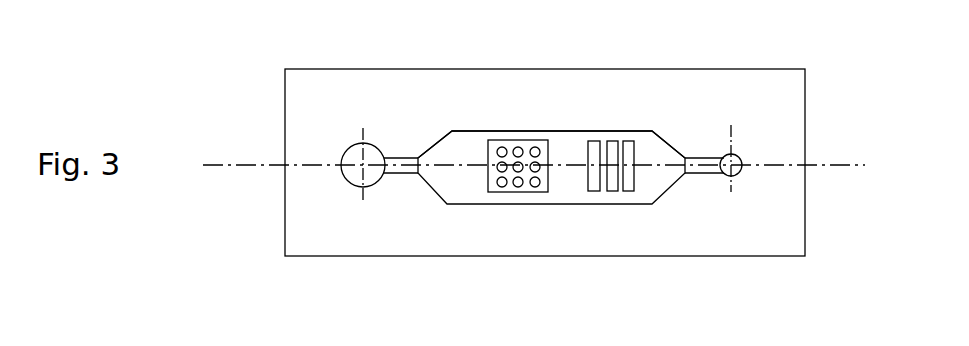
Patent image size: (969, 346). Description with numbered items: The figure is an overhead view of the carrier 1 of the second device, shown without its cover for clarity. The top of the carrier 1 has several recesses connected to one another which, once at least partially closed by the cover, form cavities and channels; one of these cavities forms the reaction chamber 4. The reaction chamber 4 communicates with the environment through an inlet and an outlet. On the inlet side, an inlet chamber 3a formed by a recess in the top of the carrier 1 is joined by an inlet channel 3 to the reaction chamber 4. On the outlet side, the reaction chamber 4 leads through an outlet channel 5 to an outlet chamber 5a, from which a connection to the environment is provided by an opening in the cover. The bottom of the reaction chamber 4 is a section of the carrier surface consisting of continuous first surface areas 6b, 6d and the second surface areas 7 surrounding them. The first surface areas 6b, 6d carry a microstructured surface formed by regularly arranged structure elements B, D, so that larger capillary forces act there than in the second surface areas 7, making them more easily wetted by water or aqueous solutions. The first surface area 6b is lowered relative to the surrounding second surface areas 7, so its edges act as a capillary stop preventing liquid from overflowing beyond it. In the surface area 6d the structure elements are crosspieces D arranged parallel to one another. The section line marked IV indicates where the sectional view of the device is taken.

The carrier 1 is at (810, 116).
The inlet channel 3 is at (405, 169).
The inlet chamber 3a is at (360, 177).
The reaction chamber 4 is at (568, 178).
The outlet channel 5 is at (702, 168).
The outlet chamber 5a is at (733, 176).
The first surface area 6b is at (521, 150).
The first surface area 6d is at (595, 152).
The second surface areas 7 is at (468, 153).
The structure elements B is at (497, 197).
The crosspieces D is at (594, 197).
The section line IV is at (230, 172).